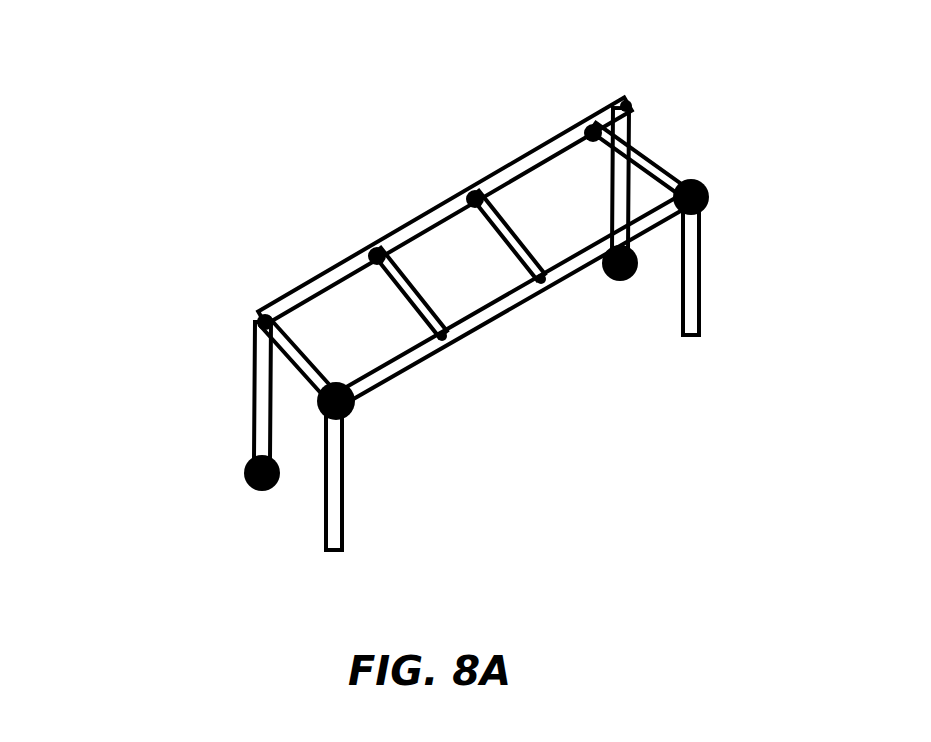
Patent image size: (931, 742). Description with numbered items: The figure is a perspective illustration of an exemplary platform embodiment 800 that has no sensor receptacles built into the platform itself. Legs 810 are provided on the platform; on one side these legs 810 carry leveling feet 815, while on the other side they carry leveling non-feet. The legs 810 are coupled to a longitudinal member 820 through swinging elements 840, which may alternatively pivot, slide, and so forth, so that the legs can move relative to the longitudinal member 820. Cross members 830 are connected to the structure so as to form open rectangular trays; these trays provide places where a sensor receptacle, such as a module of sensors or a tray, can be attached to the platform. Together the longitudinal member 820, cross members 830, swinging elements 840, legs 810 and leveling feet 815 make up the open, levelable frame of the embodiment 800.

The exemplary embodiment 800 is at (70, 92).
The legs 810 is at (264, 386).
The leveling feet 815 is at (710, 200).
The longitudinal member 820 is at (432, 206).
The cross members 830 is at (634, 156).
The swinging elements 840 is at (478, 192).